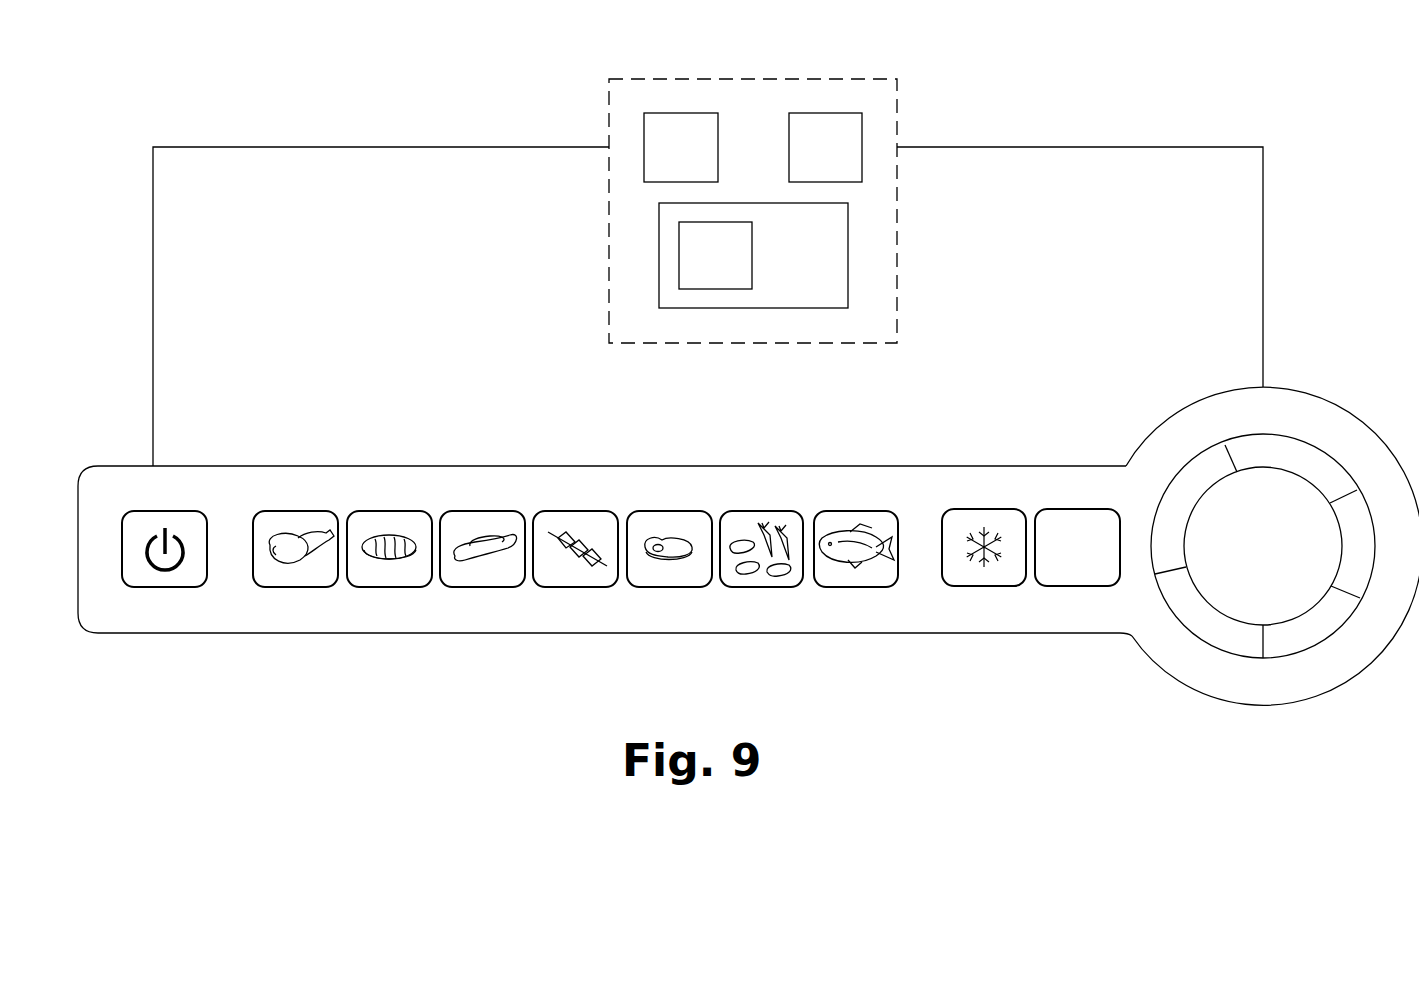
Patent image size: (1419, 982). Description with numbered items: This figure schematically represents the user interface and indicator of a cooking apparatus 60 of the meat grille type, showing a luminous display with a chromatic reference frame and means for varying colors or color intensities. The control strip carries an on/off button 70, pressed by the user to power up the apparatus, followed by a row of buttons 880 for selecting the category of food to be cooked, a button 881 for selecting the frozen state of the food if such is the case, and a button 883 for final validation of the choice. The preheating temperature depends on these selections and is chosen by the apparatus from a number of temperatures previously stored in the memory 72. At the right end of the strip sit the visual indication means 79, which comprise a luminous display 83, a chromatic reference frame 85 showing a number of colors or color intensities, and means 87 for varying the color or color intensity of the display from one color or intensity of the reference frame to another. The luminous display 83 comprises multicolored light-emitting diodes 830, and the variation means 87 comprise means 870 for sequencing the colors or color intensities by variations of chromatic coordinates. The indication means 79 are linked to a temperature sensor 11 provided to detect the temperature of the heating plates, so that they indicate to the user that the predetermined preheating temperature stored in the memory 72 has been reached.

The temperature sensor 11 is at (674, 133).
The memory 72 is at (826, 140).
The means for varying color or color intensity 87 is at (857, 261).
The means for sequencing colors 870 is at (699, 252).
The cooking apparatus 60 is at (700, 357).
The indication means 79 is at (1145, 679).
The on/off button 70 is at (167, 583).
The food category selection buttons 880 is at (908, 657).
The frozen state selection button 881 is at (979, 578).
The validation button 883 is at (1061, 578).
The chromatic reference frame 85 is at (1270, 448).
The luminous display 83 is at (1235, 588).
The multicolored light-emitting diodes 830 is at (1293, 542).